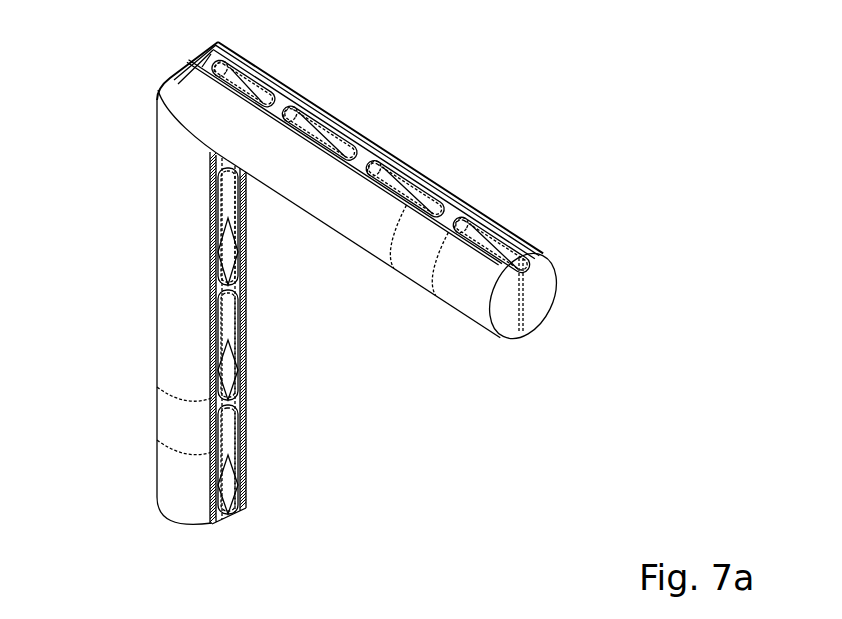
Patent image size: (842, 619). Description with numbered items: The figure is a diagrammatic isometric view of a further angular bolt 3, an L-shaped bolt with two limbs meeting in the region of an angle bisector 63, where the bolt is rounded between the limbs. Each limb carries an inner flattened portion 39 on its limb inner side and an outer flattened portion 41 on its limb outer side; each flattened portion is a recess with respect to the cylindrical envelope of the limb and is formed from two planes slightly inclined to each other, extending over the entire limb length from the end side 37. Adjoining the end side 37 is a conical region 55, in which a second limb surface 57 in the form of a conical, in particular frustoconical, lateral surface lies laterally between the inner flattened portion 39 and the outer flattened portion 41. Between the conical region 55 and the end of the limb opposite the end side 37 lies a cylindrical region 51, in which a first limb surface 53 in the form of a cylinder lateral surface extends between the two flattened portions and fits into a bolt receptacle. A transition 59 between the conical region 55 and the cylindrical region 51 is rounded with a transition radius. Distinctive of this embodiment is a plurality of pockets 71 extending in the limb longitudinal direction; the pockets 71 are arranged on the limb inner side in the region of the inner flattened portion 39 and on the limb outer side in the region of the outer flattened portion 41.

The angular bolt 3 is at (515, 79).
The end side 37 is at (542, 257).
The inner flattened portion 39 is at (248, 272).
The outer flattened portion 41 is at (237, 52).
The cylindrical region 51 is at (144, 251).
The first limb surface 53 is at (156, 300).
The conical region 55 is at (138, 483).
The second limb surface 57 is at (156, 468).
The transition 59 is at (156, 390).
The angle bisector 63 is at (156, 97).
The pocket 71 is at (350, 116).